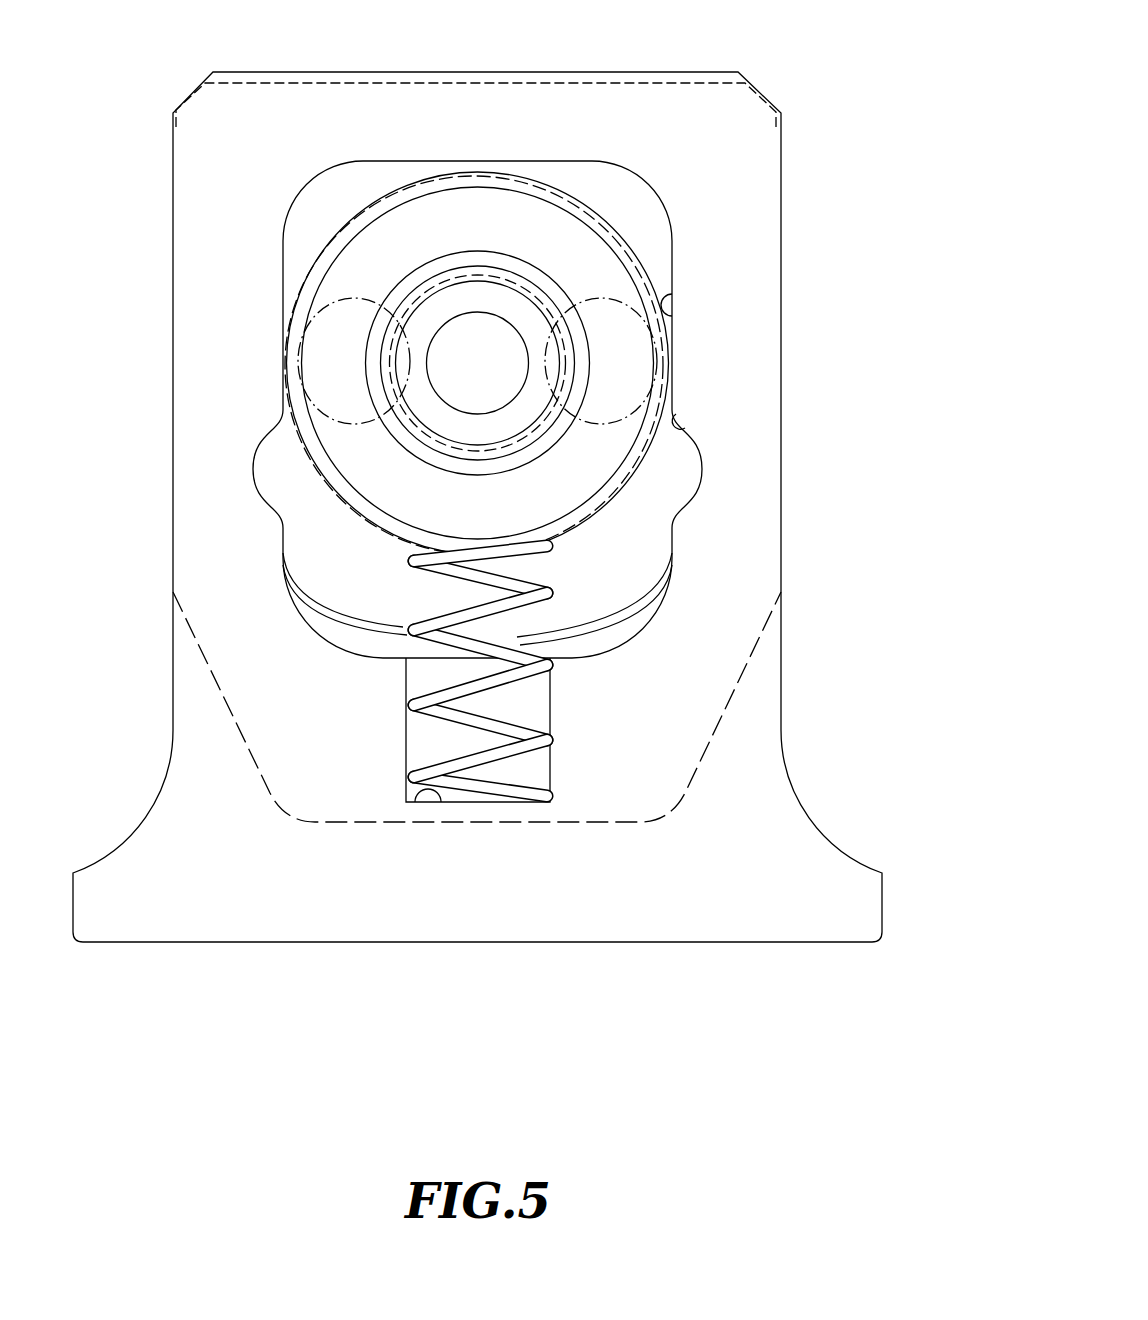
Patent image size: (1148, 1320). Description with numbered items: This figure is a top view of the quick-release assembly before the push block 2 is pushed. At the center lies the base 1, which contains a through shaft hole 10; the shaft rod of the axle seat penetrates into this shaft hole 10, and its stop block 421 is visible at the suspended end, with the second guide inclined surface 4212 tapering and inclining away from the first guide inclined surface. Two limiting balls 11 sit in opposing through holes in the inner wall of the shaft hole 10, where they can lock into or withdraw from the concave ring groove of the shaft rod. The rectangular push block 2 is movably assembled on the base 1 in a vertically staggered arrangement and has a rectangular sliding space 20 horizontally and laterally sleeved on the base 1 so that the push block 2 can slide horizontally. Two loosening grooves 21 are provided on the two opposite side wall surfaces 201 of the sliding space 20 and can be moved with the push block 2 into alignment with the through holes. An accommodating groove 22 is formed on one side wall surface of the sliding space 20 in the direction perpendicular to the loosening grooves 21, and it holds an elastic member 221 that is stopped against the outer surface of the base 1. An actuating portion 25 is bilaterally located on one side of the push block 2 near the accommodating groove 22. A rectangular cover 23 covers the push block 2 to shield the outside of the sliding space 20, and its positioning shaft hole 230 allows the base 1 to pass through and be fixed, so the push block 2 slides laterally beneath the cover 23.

The base 1 is at (566, 427).
The shaft hole 10 is at (608, 430).
The limiting ball 11 is at (673, 352).
The push block 2 is at (915, 936).
The sliding space 20 is at (592, 169).
The side wall surface 201 is at (672, 315).
The loosening groove 21 is at (685, 427).
The accommodating groove 22 is at (443, 806).
The elastic member 221 is at (513, 793).
The cover 23 is at (722, 82).
The positioning shaft hole 230 is at (635, 278).
The actuating portion 25 is at (92, 905).
The stop block 421 is at (477, 362).
The second guide inclined surface 4212 is at (423, 323).